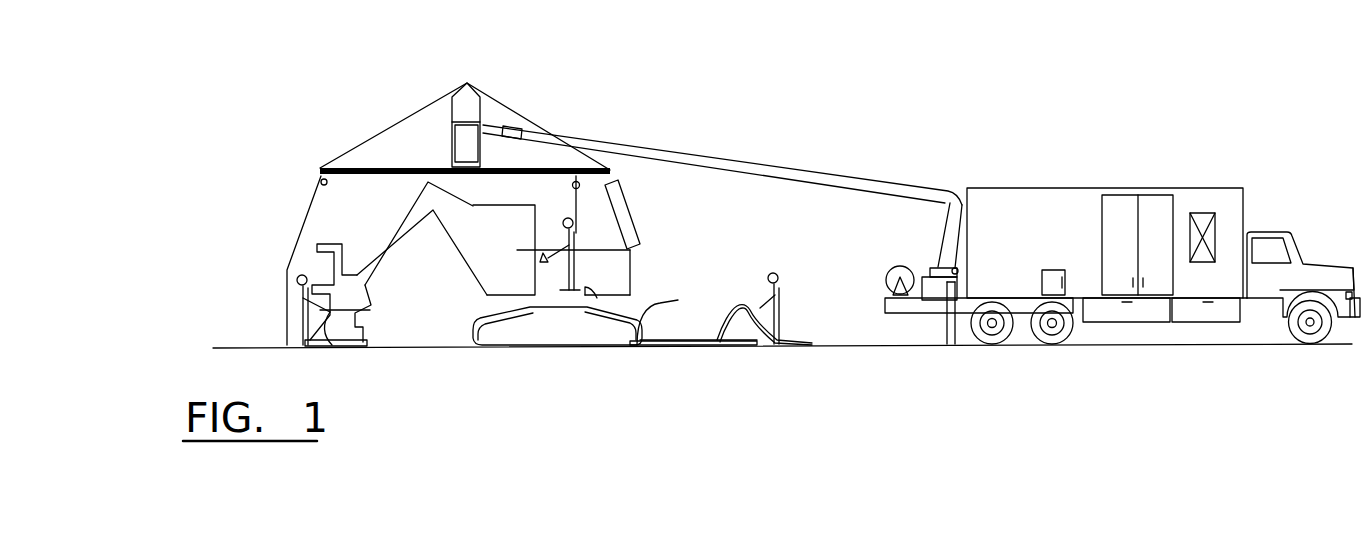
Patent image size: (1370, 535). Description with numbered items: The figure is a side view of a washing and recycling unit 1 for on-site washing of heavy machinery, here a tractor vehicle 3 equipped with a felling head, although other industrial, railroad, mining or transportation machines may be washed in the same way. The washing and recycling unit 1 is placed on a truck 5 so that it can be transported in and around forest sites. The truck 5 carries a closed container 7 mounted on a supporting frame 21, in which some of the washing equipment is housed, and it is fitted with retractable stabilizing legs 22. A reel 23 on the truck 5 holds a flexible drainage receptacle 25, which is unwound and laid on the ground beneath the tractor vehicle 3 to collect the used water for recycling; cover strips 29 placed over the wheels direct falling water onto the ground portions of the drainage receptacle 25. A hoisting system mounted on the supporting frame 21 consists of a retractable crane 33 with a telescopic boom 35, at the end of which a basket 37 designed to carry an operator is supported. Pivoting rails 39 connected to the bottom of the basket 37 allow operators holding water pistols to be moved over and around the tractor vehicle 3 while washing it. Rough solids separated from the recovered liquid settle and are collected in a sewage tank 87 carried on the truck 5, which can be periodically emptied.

The washing and recycling unit 1 is at (1021, 140).
The tractor vehicle 3 is at (531, 276).
The truck 5 is at (1085, 280).
The closed container 7 is at (1108, 188).
The supporting frame 21 is at (927, 314).
The retractable stabilizing legs 22 is at (952, 328).
The reel 23 is at (882, 287).
The drainage receptacle 25 is at (700, 336).
The cover strips 29 is at (678, 300).
The retractable crane 33 is at (942, 192).
The telescopic boom 35 is at (730, 153).
The basket 37 is at (463, 194).
The pivoting rails 39 is at (509, 165).
The sewage tank 87 is at (1144, 318).